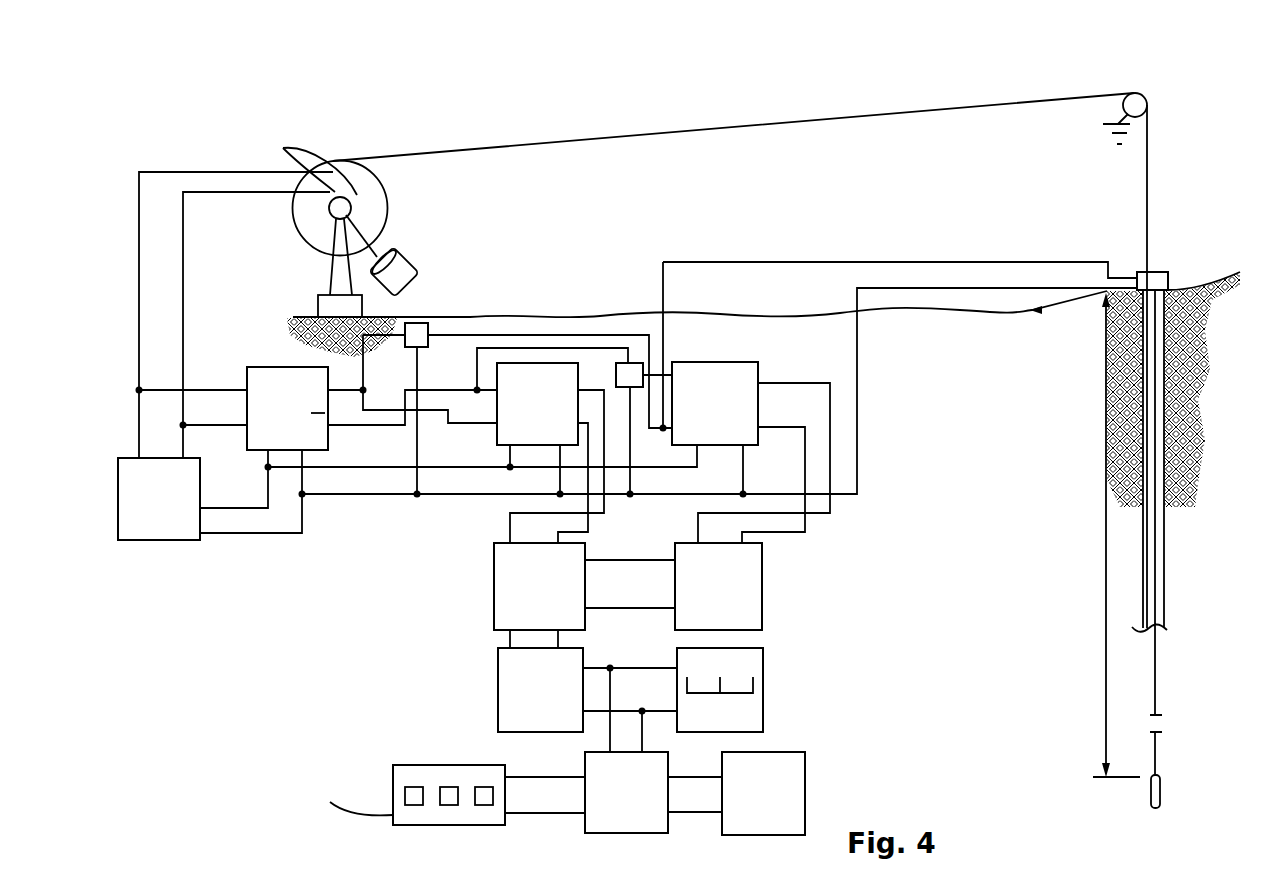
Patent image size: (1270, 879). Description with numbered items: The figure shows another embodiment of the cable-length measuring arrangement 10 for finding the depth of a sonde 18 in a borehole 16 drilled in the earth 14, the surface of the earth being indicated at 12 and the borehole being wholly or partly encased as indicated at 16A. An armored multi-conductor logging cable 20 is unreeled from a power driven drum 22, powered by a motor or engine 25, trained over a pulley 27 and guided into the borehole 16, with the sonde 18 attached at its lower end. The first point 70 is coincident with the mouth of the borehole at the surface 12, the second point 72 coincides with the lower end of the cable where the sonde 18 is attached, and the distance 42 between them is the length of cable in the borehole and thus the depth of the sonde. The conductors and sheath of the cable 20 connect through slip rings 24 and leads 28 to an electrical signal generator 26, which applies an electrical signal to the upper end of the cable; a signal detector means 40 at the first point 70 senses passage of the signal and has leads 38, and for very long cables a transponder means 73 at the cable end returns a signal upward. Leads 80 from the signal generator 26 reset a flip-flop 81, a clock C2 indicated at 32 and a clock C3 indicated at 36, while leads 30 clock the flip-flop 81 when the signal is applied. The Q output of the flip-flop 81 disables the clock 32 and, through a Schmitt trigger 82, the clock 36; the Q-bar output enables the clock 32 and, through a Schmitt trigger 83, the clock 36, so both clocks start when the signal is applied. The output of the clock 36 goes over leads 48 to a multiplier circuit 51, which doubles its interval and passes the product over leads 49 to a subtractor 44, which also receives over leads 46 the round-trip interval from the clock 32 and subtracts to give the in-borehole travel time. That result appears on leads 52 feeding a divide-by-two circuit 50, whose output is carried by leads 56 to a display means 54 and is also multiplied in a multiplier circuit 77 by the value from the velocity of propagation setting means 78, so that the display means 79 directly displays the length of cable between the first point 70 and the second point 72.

The liquid level measuring apparatus 10 is at (925, 216).
The surface of the earth 12 is at (490, 316).
The earth 14 is at (962, 482).
The borehole 16 is at (1167, 587).
The casing 16A is at (1163, 387).
The sonde 18 is at (1152, 793).
The armored multi-conductor logging cable 20 is at (665, 132).
The power driven drum 22 is at (388, 210).
The slip rings 24 is at (308, 162).
The motor or engine 25 is at (405, 258).
The electrical signal generator 26 is at (177, 543).
The pulley 27 is at (1147, 117).
The leads 28 is at (182, 270).
The leads 30 is at (207, 392).
The clock C2 32 is at (497, 408).
The clock C3 36 is at (733, 362).
The leads 38 is at (917, 287).
The signal detector means 40 is at (1178, 277).
The distance 42 is at (1107, 587).
The subtractor 44 is at (494, 607).
The leads 46 is at (560, 542).
The leads 48 is at (805, 455).
The leads 49 is at (650, 608).
The divide-by-two circuit 50 is at (498, 697).
The multiplier circuit 51 is at (762, 608).
The leads 52 is at (560, 637).
The display means 54 is at (763, 692).
The leads 56 is at (660, 711).
The first point 70 is at (1152, 273).
The second point 72 is at (1157, 775).
The transponder means 73 is at (1162, 777).
The multiplier circuit 77 is at (597, 833).
The velocity of propagation setting means 78 is at (393, 783).
The display means 79 is at (805, 782).
The leads 80 is at (272, 534).
The flip-flop 81 is at (247, 360).
The Schmitt trigger 82 is at (432, 323).
The Schmitt trigger 83 is at (637, 362).